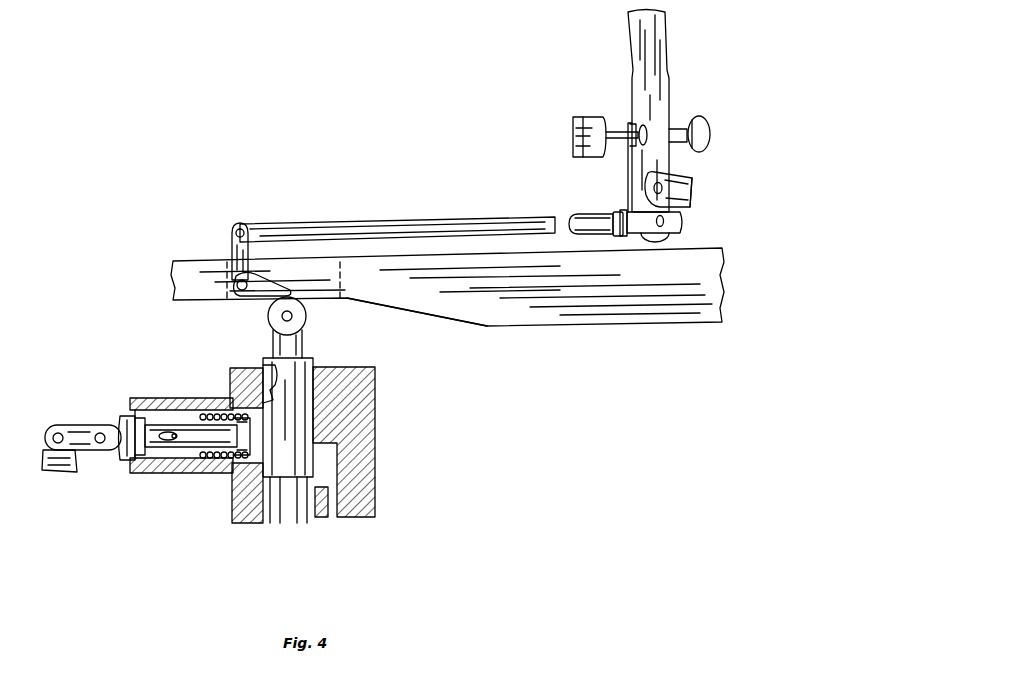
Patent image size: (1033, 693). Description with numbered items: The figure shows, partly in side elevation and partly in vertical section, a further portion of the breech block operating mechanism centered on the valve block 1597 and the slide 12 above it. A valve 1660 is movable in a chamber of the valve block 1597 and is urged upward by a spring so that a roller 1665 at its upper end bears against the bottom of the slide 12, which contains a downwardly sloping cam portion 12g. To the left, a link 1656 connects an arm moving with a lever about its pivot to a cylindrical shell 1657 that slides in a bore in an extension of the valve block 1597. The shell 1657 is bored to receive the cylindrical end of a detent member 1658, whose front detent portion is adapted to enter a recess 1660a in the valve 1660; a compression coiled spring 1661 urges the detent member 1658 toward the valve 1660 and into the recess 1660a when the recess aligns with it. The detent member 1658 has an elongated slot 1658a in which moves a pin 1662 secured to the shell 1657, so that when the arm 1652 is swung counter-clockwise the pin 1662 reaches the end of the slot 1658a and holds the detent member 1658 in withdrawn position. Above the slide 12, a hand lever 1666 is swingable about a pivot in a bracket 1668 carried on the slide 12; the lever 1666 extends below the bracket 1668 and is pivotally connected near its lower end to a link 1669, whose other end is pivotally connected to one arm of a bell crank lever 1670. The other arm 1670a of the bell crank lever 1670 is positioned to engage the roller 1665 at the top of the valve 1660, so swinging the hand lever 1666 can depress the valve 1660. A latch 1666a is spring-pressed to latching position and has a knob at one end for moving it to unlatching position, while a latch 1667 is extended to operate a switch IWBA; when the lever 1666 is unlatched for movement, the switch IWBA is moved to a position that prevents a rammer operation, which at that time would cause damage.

The slide 12 is at (632, 312).
The downwardly sloping cam portion 12g is at (425, 308).
The arm 1652 is at (45, 450).
The link 1656 is at (78, 430).
The cylindrical shell 1657 is at (137, 400).
The detent member 1658 is at (202, 446).
The elongated slot 1658a is at (160, 450).
The valve 1660 is at (296, 378).
The recess 1660a is at (264, 368).
The compression coiled spring 1661 is at (218, 392).
The pin 1662 is at (172, 432).
The roller 1665 is at (306, 316).
The hand lever 1666 is at (661, 78).
The latch 1666a is at (668, 115).
The latch 1667 is at (673, 177).
The bracket 1668 is at (697, 184).
The link 1669 is at (506, 218).
The bell crank lever 1670 is at (232, 232).
The arm of bell crank lever 1670a is at (266, 285).
The valve block 1597 is at (371, 383).
The switch IWBA is at (603, 115).